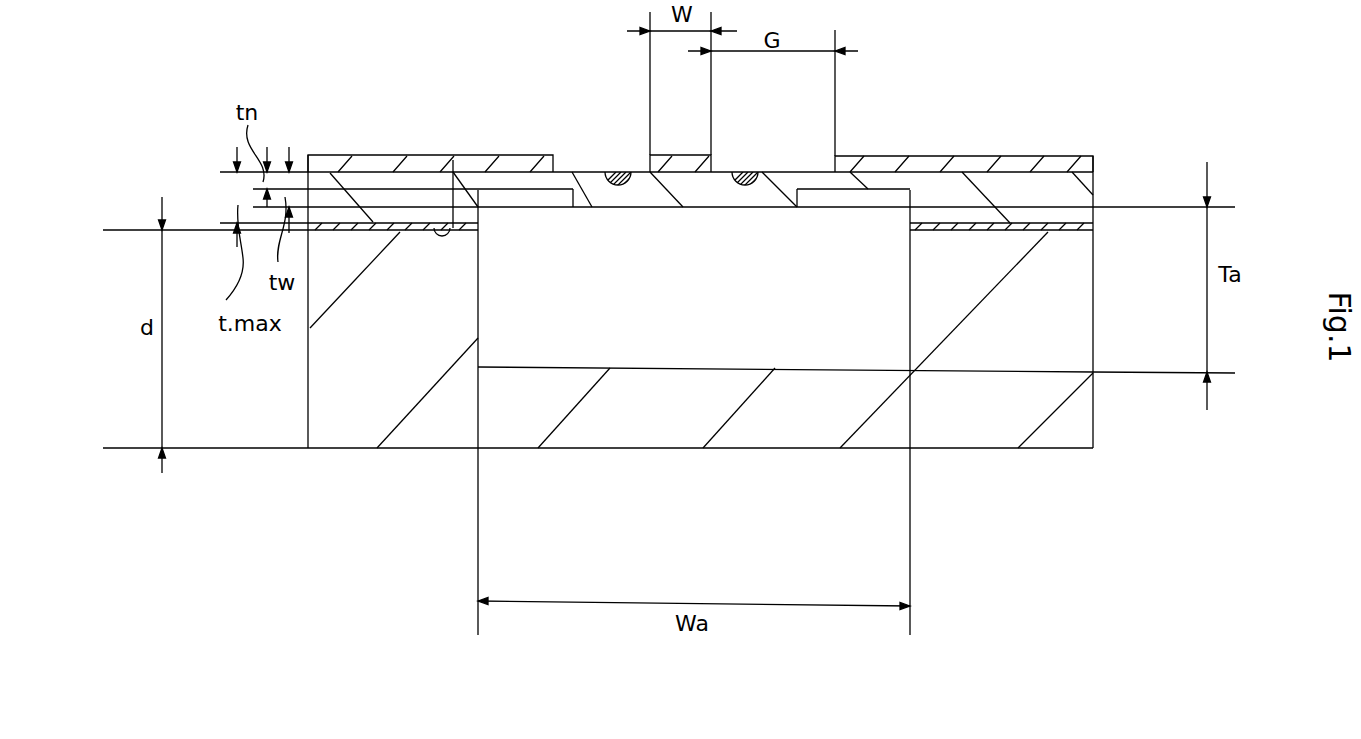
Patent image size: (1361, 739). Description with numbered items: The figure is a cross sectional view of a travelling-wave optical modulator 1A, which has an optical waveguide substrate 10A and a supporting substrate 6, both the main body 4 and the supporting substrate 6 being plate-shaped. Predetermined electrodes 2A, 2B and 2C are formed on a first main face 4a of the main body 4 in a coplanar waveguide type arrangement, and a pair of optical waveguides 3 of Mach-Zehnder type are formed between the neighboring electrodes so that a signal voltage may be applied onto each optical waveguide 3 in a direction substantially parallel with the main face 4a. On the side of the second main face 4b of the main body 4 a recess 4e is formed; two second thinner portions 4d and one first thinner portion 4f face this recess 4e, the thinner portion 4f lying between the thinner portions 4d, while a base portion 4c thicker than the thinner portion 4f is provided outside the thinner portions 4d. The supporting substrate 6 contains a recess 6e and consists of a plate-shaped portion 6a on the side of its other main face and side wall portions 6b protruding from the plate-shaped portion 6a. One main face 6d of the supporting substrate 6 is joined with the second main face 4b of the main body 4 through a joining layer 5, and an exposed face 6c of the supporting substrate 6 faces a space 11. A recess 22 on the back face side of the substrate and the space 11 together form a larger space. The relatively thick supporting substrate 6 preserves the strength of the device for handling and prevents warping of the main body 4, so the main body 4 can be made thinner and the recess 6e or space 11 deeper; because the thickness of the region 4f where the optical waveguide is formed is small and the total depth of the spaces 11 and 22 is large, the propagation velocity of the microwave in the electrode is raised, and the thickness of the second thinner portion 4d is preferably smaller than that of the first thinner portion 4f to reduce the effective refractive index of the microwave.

The travelling-wave optical modulator 1A is at (1097, 140).
The optical waveguide substrate 10A is at (1105, 170).
The electrode 2A is at (415, 165).
The electrode 2B is at (670, 157).
The electrode 2C is at (873, 157).
The optical waveguide 3 is at (612, 172).
The main body 4 is at (1103, 198).
The first main face 4a is at (938, 177).
The second main face 4b is at (453, 160).
The base portion 4c is at (333, 203).
The second thinner portion 4d is at (503, 180).
The recess 4e is at (542, 197).
The first thinner portion 4f is at (647, 193).
The joining layer 5 is at (1093, 228).
The supporting substrate 6 is at (1105, 343).
The plate-shaped portion 6a is at (907, 428).
The side wall portion 6b is at (1077, 287).
The exposed face 6c is at (775, 374).
The main face 6d is at (390, 222).
The recess 6e is at (877, 355).
The space 11 is at (690, 310).
The recess 22 is at (898, 207).